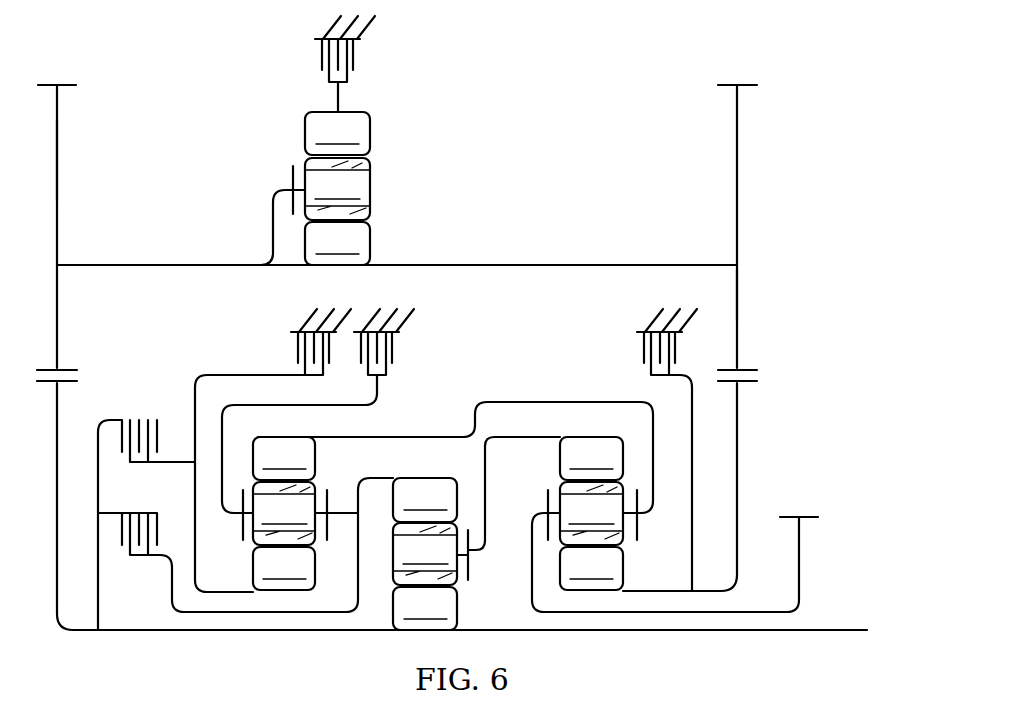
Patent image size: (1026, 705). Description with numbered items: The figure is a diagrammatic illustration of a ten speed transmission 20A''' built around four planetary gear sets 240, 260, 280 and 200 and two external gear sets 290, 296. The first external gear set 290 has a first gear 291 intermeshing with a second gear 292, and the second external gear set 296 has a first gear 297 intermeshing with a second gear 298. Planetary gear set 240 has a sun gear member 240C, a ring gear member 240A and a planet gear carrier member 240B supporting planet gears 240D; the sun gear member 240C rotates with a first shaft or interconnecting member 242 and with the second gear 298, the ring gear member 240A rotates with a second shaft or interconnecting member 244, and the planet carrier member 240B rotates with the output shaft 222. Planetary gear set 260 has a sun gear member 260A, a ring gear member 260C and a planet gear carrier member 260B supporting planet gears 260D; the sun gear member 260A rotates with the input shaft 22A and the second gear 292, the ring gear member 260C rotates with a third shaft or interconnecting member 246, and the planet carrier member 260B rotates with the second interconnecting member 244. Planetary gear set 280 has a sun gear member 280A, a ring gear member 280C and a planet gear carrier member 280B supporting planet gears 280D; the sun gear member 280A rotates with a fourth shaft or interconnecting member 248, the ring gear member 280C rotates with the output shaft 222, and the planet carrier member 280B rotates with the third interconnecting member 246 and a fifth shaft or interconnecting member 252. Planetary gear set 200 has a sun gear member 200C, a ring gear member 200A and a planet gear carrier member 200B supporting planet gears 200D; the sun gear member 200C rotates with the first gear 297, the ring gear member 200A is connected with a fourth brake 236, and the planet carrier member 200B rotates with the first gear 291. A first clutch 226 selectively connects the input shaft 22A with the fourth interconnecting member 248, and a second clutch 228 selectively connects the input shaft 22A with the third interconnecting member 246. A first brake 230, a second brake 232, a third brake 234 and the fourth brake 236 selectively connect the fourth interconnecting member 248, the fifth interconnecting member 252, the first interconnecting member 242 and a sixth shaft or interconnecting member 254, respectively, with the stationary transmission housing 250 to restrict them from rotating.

The ten speed transmission 20A''' is at (834, 119).
The input shaft 22A is at (128, 632).
The planetary gear set 200 is at (337, 152).
The ring gear member 200A is at (337, 133).
The planet gear carrier member 200B is at (291, 172).
The sun gear member 200C is at (337, 243).
The planet gears 200D is at (337, 189).
The output shaft 222 is at (430, 435).
The first clutch 226 is at (122, 440).
The second clutch 228 is at (157, 530).
The first brake 230 is at (299, 350).
The second brake 232 is at (398, 352).
The third brake 234 is at (643, 353).
The fourth brake 236 is at (355, 57).
The planetary gear set 240 is at (568, 551).
The ring gear member 240A is at (591, 458).
The planet gear carrier member 240B is at (548, 503).
The sun gear member 240C is at (591, 568).
The planet gears 240D is at (591, 513).
The first shaft or interconnecting member 242 is at (692, 460).
The second shaft or interconnecting member 244 is at (524, 437).
The third shaft or interconnecting member 246 is at (202, 612).
The fourth shaft or interconnecting member 248 is at (230, 375).
The transmission housing 250 is at (372, 23).
The fifth shaft or interconnecting member 252 is at (222, 440).
The sixth shaft or interconnecting member 254 is at (338, 97).
The planetary gear set 260 is at (415, 571).
The sun gear member 260A is at (425, 608).
The planet gear carrier member 260B is at (468, 560).
The ring gear member 260C is at (425, 500).
The planet gears 260D is at (425, 554).
The planetary gear set 280 is at (300, 551).
The sun gear member 280A is at (284, 568).
The planet gear carrier member 280B is at (335, 500).
The ring gear member 280C is at (284, 458).
The planet gears 280D is at (284, 513).
The first external gear set 290 is at (72, 70).
The first gear 291 is at (57, 135).
The second gear 292 is at (52, 583).
The second external gear set 296 is at (750, 70).
The first gear 297 is at (737, 290).
The second gear 298 is at (737, 412).